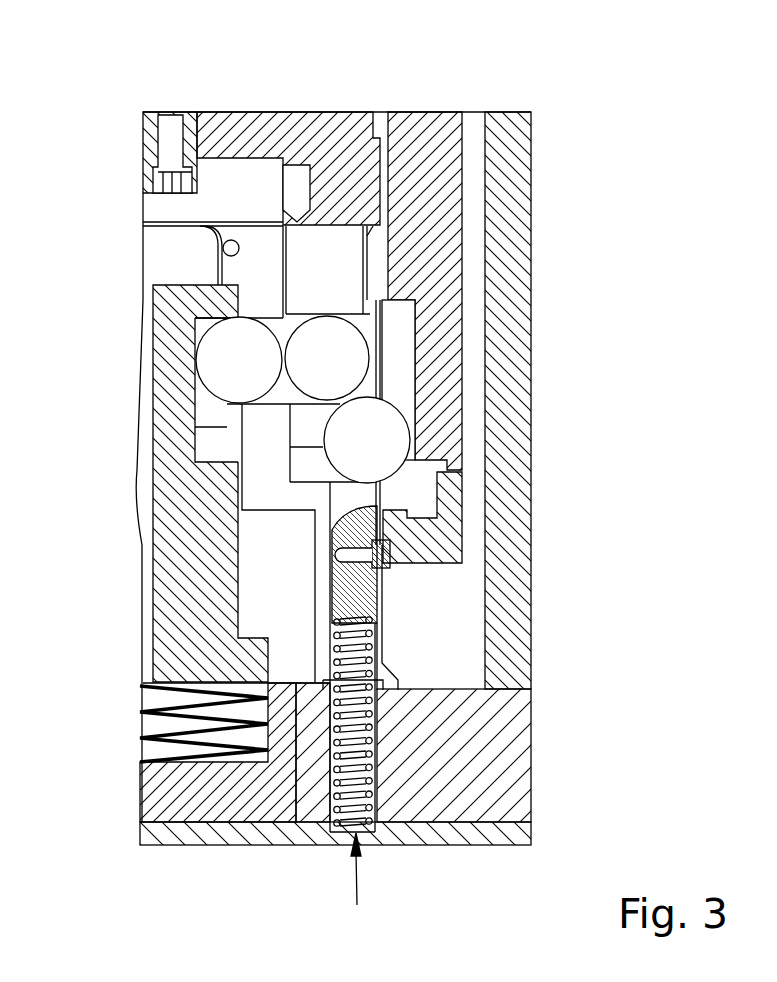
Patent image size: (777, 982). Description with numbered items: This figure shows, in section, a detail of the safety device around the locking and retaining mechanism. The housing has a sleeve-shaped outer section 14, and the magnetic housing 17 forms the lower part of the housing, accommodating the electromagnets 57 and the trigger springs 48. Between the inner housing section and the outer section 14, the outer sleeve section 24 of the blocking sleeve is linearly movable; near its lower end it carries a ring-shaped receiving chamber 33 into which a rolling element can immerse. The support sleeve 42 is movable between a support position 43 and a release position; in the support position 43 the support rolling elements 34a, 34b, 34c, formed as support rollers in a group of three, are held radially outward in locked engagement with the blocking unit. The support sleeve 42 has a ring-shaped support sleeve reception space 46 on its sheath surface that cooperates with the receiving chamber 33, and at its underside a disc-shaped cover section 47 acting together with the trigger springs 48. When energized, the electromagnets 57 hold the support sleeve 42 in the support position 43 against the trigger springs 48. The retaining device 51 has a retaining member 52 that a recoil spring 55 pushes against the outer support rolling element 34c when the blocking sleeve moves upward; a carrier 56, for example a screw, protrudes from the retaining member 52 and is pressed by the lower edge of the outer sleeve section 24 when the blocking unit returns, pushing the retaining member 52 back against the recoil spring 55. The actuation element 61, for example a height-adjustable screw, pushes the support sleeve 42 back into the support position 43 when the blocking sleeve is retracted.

The sleeve-shaped outer section 14 is at (512, 178).
The magnetic housing 17 is at (418, 792).
The outer sleeve section 24 is at (447, 527).
The receiving chamber 33 is at (403, 327).
The support rolling element 34a is at (232, 355).
The support rolling element 34b is at (345, 370).
The support rolling element 34c is at (388, 436).
The support sleeve 42 is at (240, 302).
The support position 43 is at (165, 270).
The support sleeve reception space 46 is at (202, 409).
The cover section 47 is at (213, 657).
The trigger spring 48 is at (155, 735).
The retaining device 51 is at (356, 887).
The retaining member 52 is at (353, 600).
The recoil spring 55 is at (377, 718).
The carrier 56 is at (390, 553).
The electromagnet 57 is at (175, 800).
The actuation element 61 is at (180, 160).